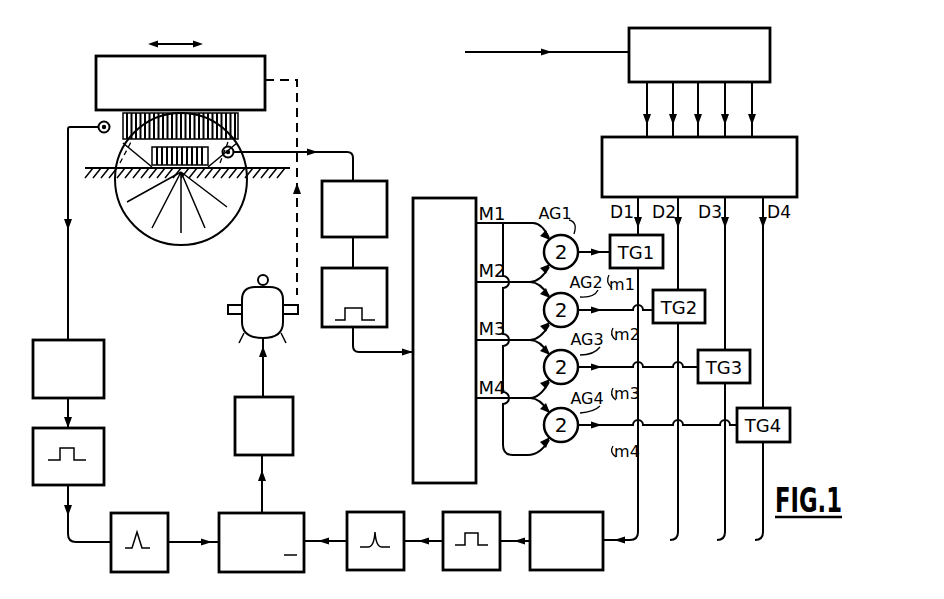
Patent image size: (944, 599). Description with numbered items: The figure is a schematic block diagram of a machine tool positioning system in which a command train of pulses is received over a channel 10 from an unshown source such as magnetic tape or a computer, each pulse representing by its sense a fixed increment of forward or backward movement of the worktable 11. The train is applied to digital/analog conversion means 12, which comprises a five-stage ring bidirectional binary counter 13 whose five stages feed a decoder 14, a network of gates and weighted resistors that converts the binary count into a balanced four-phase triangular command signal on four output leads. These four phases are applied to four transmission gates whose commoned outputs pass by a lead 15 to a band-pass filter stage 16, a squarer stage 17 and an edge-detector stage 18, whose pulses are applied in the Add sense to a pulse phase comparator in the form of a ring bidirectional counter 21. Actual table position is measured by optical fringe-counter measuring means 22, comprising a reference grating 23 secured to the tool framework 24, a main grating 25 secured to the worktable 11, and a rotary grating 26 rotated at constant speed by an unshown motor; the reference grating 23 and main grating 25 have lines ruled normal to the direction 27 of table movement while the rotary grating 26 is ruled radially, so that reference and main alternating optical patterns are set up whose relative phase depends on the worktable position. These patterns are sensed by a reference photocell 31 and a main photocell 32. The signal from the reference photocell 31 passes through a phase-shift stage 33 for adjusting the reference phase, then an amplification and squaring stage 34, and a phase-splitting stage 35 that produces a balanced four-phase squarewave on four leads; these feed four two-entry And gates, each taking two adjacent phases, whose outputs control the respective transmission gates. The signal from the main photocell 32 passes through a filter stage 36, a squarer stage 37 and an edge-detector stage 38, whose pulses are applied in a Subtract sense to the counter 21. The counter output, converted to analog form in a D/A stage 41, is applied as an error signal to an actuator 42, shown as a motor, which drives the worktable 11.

The channel 10 is at (547, 55).
The worktable 11 is at (243, 55).
The digital/analog conversion means 12 is at (763, 109).
The ring bidirectional binary counter 13 is at (771, 45).
The decoder 14 is at (602, 160).
The lead 15 is at (611, 535).
The band-pass filter stage 16 is at (580, 512).
The squarer stage 17 is at (487, 512).
The edge-detector stage 18 is at (390, 512).
The ring bidirectional counter 21 is at (287, 513).
The optical fringe-counter measuring means 22 is at (191, 271).
The reference grating 23 is at (130, 196).
The tool framework 24 is at (104, 166).
The main grating 25 is at (240, 128).
The rotary grating 26 is at (214, 222).
The direction of table movement 27 is at (178, 42).
The reference photocell 31 is at (235, 150).
The main photocell 32 is at (100, 124).
The phase-shift stage 33 is at (372, 181).
The amplification and squaring stage 34 is at (387, 282).
The phase-splitting stage 35 is at (440, 198).
The filter stage 36 is at (105, 368).
The squarer stage 37 is at (104, 452).
The edge-detector stage 38 is at (152, 513).
The D/A stage 41 is at (294, 424).
The actuator 42 is at (272, 328).